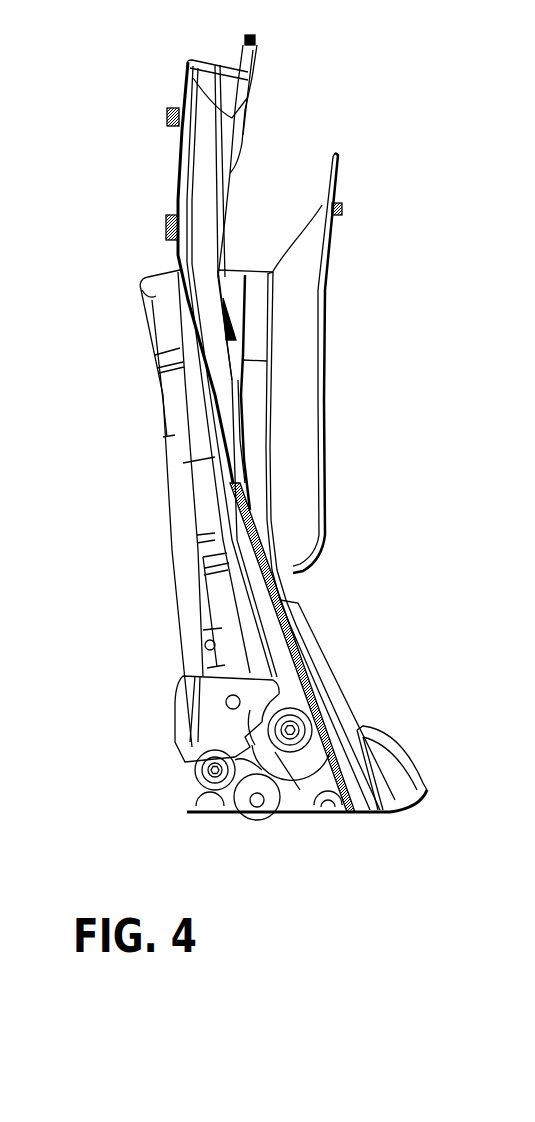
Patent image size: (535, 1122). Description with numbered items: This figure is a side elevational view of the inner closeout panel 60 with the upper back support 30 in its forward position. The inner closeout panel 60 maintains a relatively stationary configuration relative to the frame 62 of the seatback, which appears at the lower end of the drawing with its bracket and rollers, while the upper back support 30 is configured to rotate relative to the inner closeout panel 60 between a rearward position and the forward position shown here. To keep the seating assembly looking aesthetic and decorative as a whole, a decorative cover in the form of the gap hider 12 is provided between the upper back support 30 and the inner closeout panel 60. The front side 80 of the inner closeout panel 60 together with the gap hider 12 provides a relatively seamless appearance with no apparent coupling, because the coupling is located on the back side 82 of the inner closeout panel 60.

The inner closeout panel 60 is at (212, 82).
The front side 80 is at (250, 115).
The back side 82 is at (177, 250).
The gap hider 12 is at (233, 270).
The upper back support 30 is at (338, 162).
The frame 62 is at (188, 714).